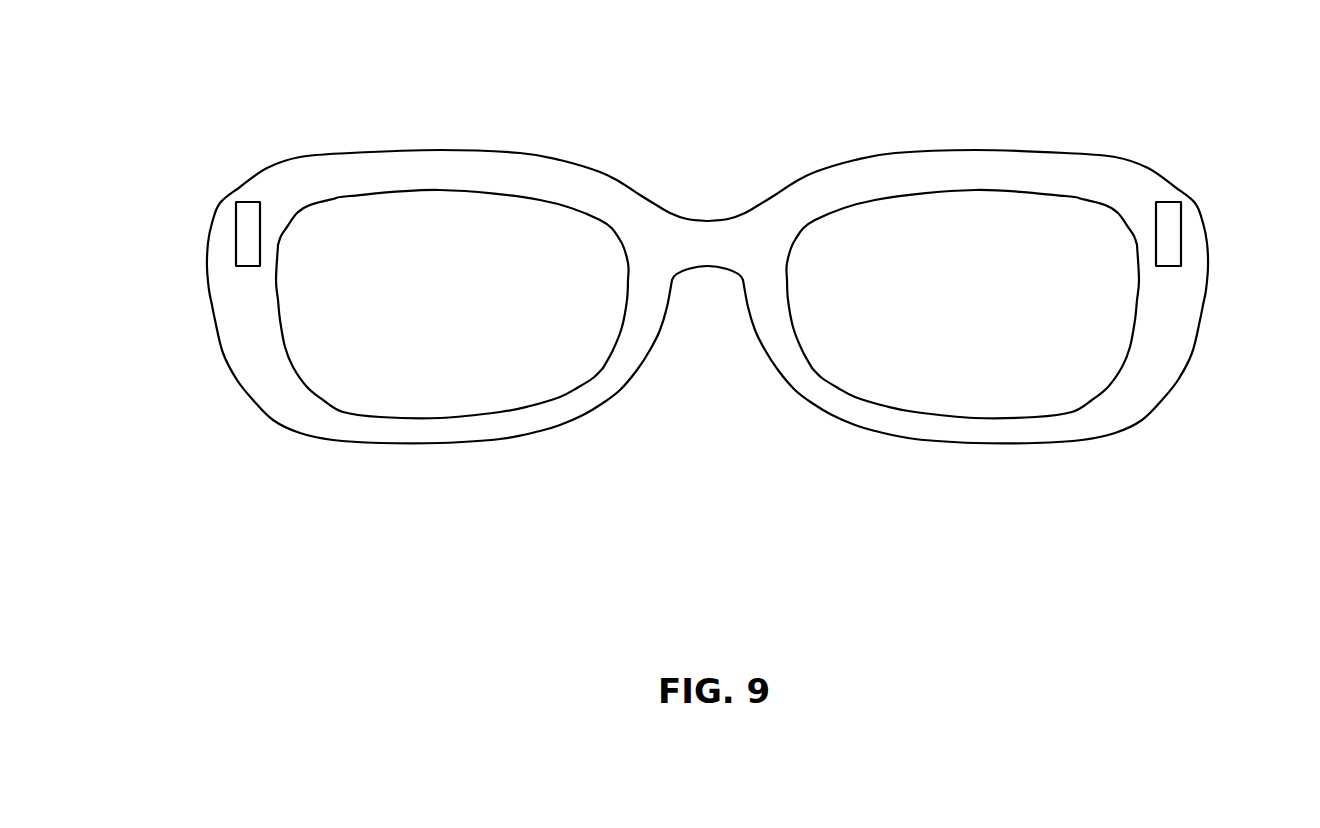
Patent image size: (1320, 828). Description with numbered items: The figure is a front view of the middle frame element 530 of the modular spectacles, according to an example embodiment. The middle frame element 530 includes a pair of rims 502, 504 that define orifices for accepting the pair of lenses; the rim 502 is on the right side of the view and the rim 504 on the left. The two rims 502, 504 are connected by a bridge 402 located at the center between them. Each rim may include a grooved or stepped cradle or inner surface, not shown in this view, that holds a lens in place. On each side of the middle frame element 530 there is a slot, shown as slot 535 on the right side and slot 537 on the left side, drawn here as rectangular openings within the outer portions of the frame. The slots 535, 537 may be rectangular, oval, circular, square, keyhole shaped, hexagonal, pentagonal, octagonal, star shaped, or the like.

The bridge 402 is at (707, 297).
The rim 502 is at (995, 448).
The rim 504 is at (472, 435).
The middle frame element 530 is at (825, 413).
The slot 535 is at (1175, 238).
The slot 537 is at (246, 233).